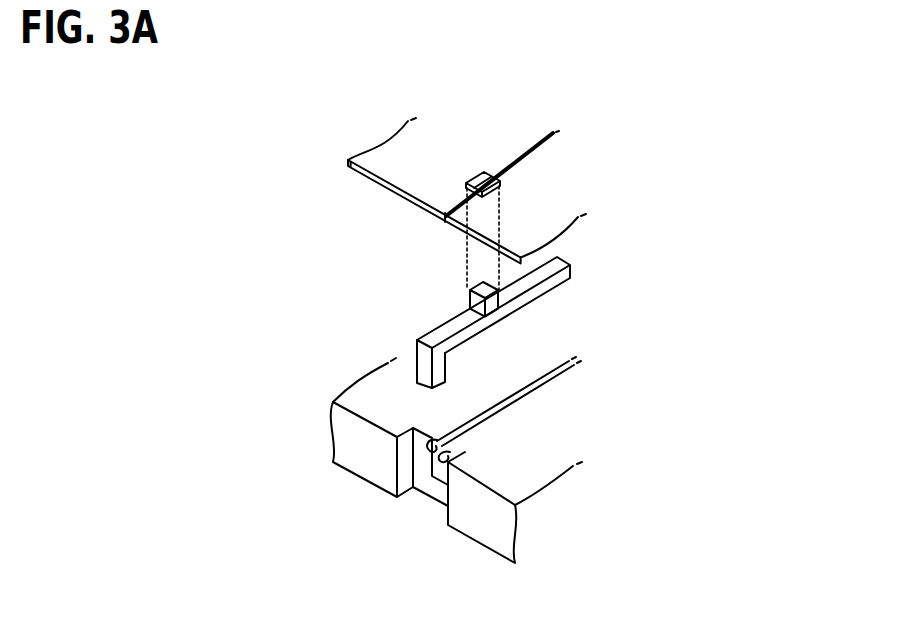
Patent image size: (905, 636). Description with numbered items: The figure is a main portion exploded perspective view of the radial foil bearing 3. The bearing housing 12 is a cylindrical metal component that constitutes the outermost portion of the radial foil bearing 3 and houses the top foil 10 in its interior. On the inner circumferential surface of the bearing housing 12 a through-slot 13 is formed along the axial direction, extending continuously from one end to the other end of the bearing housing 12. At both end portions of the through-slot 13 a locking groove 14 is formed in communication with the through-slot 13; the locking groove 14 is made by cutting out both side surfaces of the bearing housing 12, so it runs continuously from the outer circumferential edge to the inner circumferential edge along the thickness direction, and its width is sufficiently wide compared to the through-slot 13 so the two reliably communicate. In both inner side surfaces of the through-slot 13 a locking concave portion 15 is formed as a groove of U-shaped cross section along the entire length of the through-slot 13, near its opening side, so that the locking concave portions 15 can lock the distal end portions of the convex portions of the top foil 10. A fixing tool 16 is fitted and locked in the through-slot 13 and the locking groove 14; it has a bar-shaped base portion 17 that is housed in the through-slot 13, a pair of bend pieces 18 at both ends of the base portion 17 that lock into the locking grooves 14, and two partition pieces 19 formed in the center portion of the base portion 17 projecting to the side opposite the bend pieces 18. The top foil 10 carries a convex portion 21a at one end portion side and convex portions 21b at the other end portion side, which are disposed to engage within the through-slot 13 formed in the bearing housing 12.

The radial foil bearing 3 is at (320, 262).
The top foil 10 is at (402, 163).
The convex portion 21a is at (520, 170).
The convex portions 21b is at (448, 203).
The partition pieces 19 is at (481, 293).
The fixing tool 16 is at (395, 342).
The base portion 17 is at (472, 332).
The bend pieces 18 is at (415, 376).
The bearing housing 12 is at (363, 452).
The locking groove 14 is at (403, 477).
The locking concave portion 15 is at (437, 441).
The through-slot 13 is at (453, 462).